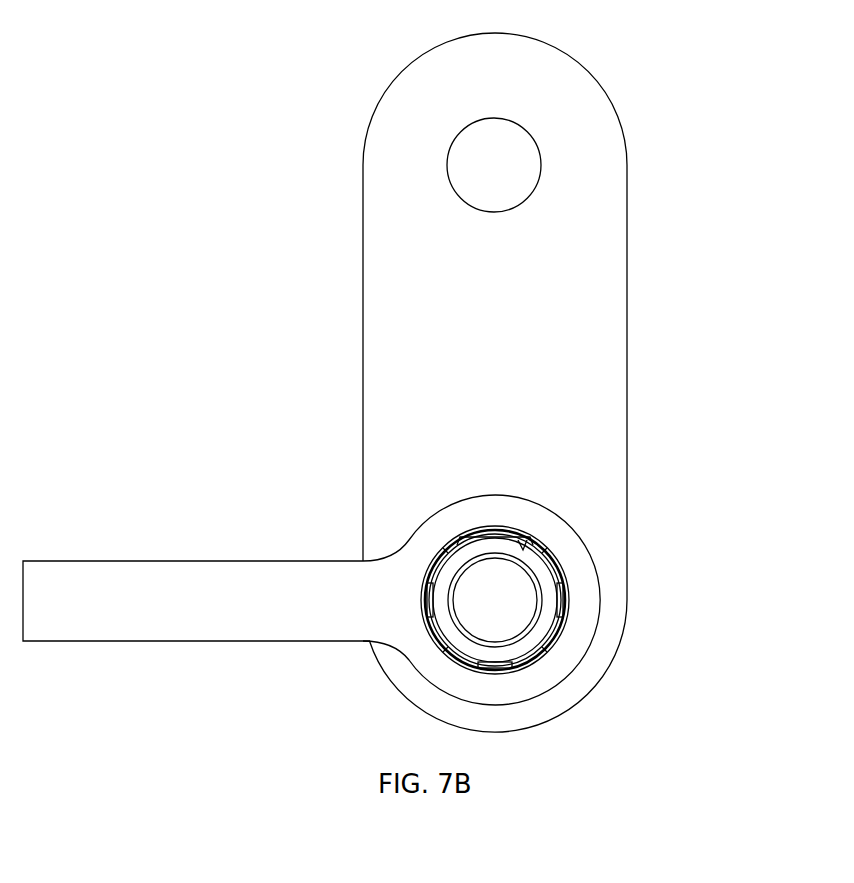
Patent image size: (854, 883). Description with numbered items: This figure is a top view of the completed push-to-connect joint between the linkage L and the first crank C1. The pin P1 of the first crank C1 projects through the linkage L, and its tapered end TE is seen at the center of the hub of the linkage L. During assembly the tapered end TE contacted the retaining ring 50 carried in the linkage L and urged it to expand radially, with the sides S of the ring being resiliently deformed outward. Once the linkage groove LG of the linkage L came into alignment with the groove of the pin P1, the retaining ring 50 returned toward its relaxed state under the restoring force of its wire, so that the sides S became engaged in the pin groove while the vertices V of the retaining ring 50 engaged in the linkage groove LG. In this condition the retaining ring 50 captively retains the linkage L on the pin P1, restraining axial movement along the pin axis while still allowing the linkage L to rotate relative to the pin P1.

The first crank C1 is at (584, 338).
The linkage L is at (192, 568).
The retaining ring 50 is at (510, 576).
The pin P1 is at (483, 577).
The tapered end TE is at (498, 545).
The linkage groove LG is at (523, 548).
The sides of the ring S is at (430, 598).
The vertices of the retaining ring V is at (438, 560).